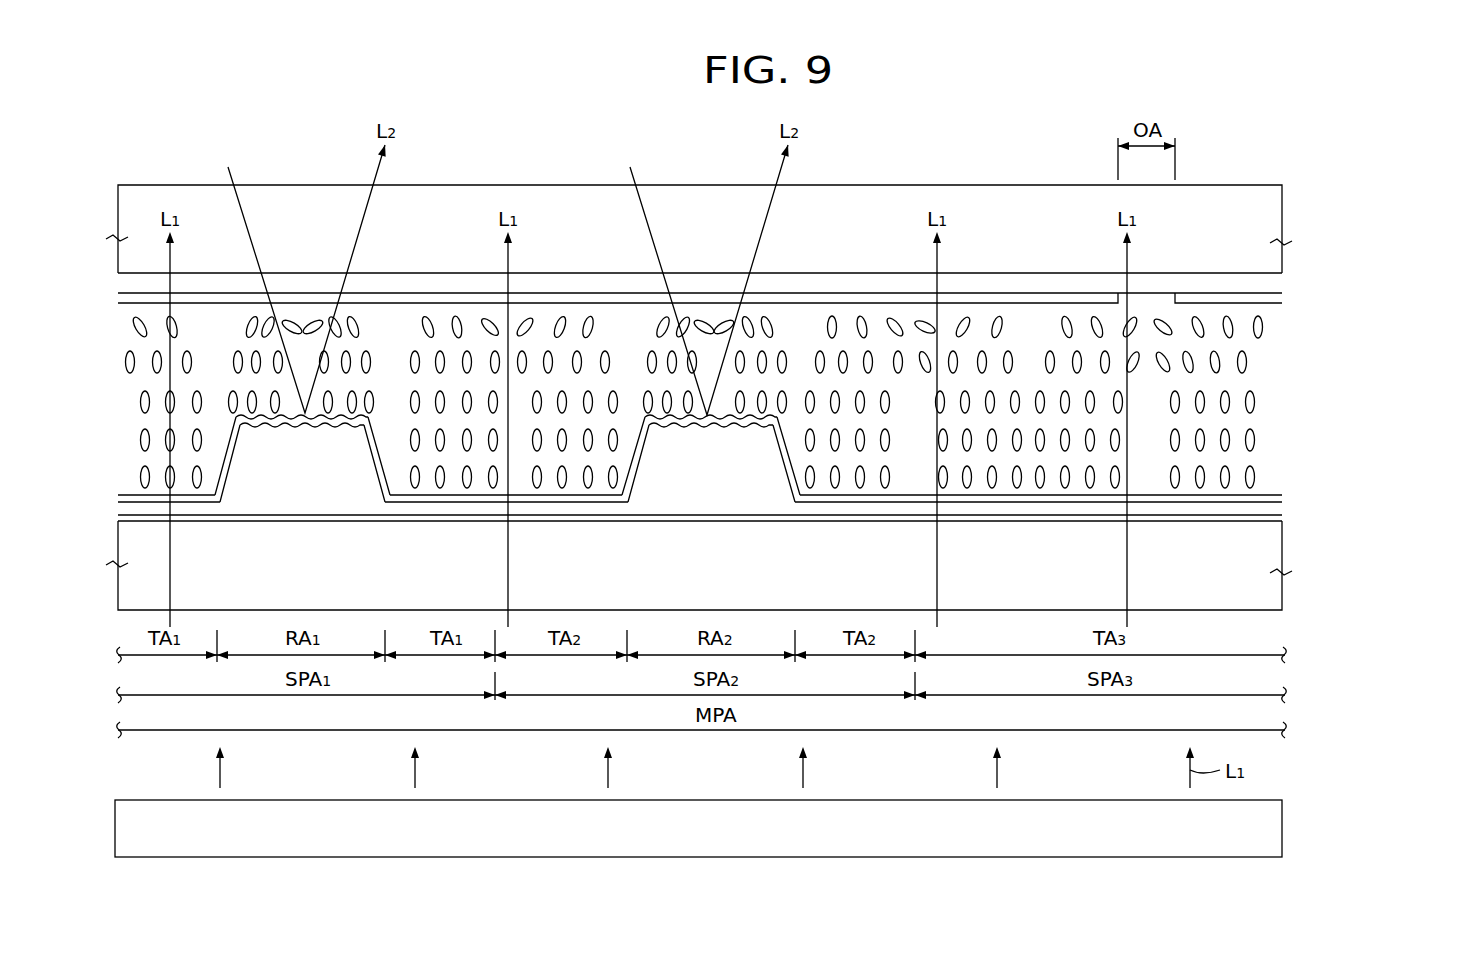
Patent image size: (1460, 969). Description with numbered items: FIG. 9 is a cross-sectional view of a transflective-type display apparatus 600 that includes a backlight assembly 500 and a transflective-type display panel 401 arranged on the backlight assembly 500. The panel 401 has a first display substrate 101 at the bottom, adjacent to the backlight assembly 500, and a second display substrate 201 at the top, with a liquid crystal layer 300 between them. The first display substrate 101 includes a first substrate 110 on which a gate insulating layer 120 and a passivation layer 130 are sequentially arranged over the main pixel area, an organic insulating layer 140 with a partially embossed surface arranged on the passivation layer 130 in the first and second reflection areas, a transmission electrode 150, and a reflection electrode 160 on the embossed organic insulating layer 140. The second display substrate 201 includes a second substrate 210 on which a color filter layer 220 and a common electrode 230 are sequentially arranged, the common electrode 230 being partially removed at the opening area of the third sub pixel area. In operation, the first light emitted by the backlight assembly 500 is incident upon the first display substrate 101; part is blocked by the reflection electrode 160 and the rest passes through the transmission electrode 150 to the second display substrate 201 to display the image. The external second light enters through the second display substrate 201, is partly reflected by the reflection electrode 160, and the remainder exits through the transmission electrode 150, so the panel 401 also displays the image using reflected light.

The transflective-type display apparatus 600 is at (718, 125).
The second substrate 210 is at (1282, 210).
The color filter layer 220 is at (1282, 283).
The common electrode 230 is at (1282, 305).
The second display substrate 201 is at (1350, 198).
The transflective-type display panel 401 is at (1400, 205).
The liquid crystal layer 300 is at (1255, 400).
The transmission electrode 150 is at (1282, 497).
The passivation layer 130 is at (1282, 509).
The gate insulating layer 120 is at (1282, 522).
The first substrate 110 is at (1282, 583).
The first display substrate 101 is at (1350, 468).
The organic insulating layer 140 is at (335, 482).
The reflection electrode 160 is at (273, 423).
The backlight assembly 500 is at (1282, 822).